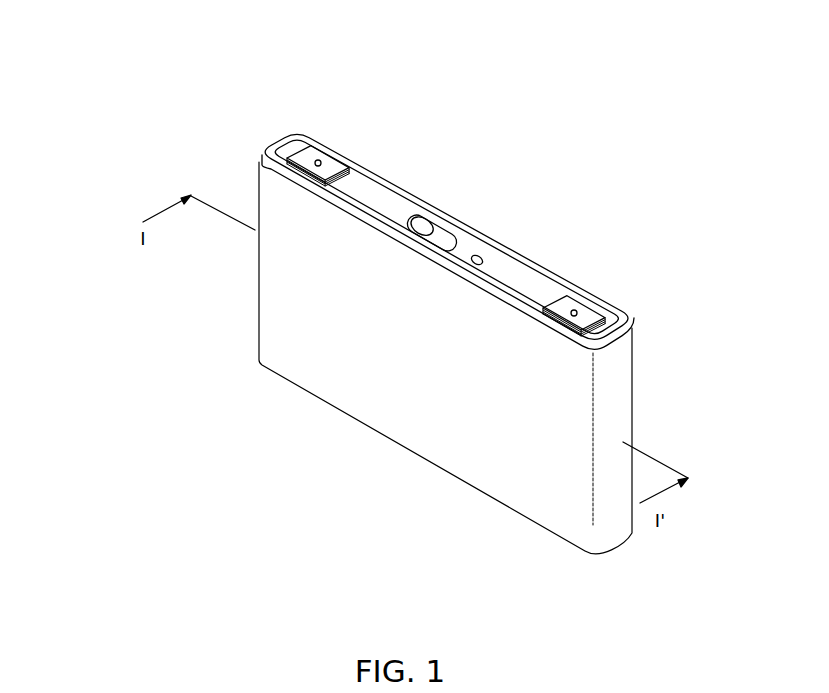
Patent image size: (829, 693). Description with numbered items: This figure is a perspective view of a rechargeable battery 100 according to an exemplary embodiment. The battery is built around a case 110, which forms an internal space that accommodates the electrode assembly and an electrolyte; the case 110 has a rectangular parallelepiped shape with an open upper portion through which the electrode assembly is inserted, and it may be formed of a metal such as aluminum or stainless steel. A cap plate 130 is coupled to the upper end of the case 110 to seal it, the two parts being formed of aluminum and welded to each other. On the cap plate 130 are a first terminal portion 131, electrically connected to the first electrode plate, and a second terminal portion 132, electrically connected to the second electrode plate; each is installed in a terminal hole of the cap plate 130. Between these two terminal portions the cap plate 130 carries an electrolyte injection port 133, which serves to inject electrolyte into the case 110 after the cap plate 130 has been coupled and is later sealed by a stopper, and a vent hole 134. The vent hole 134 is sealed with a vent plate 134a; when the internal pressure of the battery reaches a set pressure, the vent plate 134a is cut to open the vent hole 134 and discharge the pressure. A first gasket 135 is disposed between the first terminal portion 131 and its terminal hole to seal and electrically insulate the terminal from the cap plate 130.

The rechargeable battery 100 is at (236, 41).
The case 110 is at (366, 367).
The cap plate 130 is at (481, 241).
The first terminal portion 131 is at (328, 168).
The second terminal portion 132 is at (582, 317).
The electrolyte injection port 133 is at (482, 257).
The vent hole 134 is at (343, 199).
The vent plate 134a is at (433, 226).
The first gasket 135 is at (628, 330).